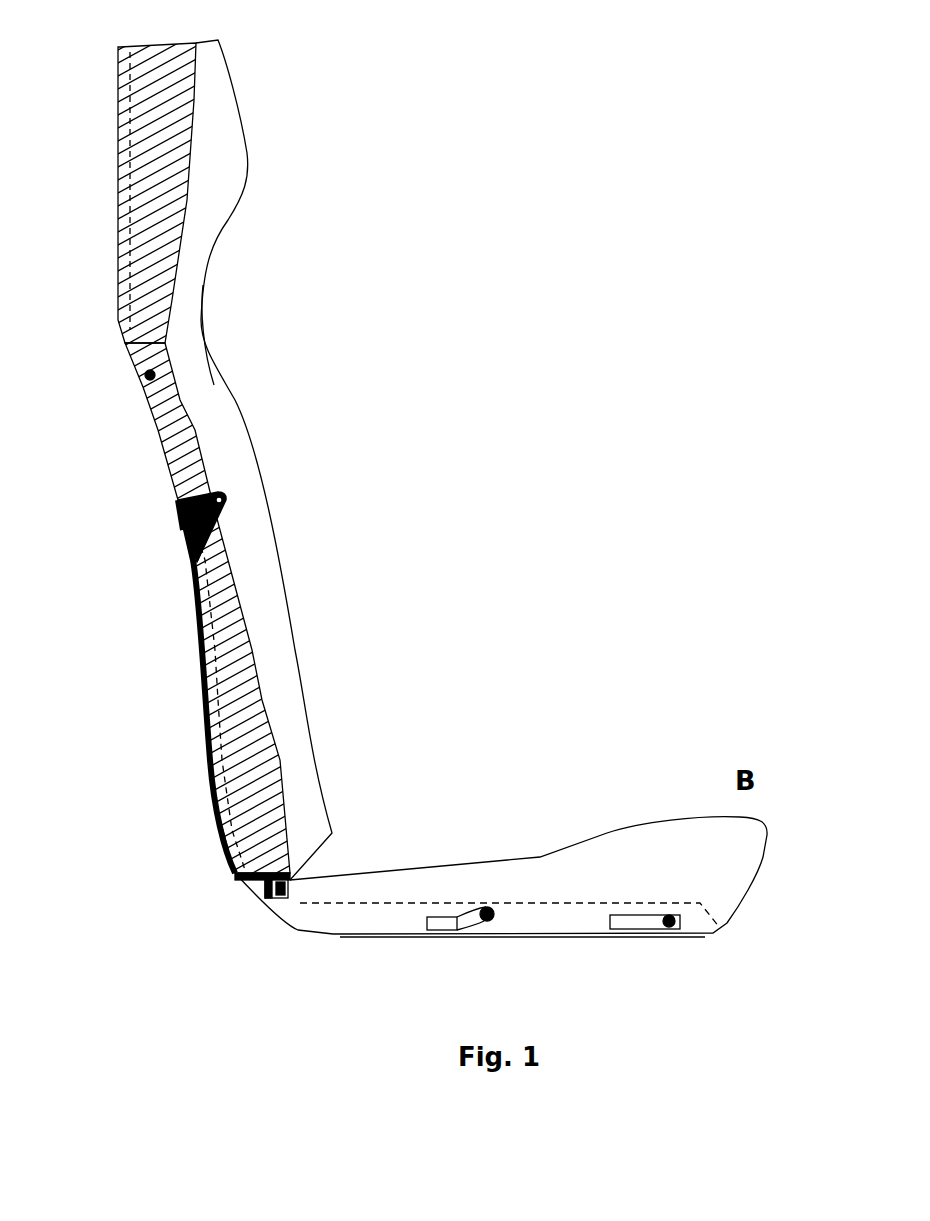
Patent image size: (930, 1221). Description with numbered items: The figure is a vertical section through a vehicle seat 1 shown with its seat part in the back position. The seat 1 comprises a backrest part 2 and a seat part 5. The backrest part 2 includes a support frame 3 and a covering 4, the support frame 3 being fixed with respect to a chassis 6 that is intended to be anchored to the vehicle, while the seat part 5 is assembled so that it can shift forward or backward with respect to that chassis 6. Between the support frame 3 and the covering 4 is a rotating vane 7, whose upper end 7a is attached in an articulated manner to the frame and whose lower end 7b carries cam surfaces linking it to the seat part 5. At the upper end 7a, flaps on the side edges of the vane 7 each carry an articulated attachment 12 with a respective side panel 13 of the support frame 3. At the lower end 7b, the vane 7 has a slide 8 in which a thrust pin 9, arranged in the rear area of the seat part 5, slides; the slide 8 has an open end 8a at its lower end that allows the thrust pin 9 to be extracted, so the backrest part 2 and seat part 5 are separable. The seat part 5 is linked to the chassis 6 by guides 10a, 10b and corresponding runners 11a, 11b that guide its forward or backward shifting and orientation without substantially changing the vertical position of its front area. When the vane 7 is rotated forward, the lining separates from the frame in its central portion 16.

The seat 1 is at (270, 261).
The backrest part 2 is at (118, 208).
The support frame 3 is at (205, 685).
The covering 4 is at (146, 375).
The seat part 5 is at (600, 833).
The chassis 6 is at (697, 915).
The rotating vane 7 is at (200, 649).
The upper end 7a is at (183, 535).
The lower end 7b is at (240, 877).
The slide 8 is at (267, 890).
The open end 8a is at (279, 898).
The thrust pin 9 is at (272, 895).
The guide 10a is at (634, 920).
The guide 10b is at (442, 918).
The runner 11a is at (674, 926).
The runner 11b is at (490, 918).
The articulated attachment 12 is at (228, 500).
The side panel 13 is at (212, 388).
The central portion 16 is at (224, 513).